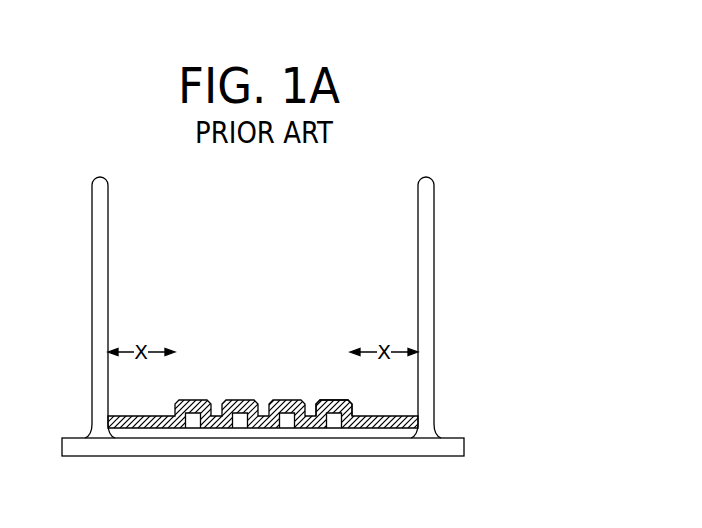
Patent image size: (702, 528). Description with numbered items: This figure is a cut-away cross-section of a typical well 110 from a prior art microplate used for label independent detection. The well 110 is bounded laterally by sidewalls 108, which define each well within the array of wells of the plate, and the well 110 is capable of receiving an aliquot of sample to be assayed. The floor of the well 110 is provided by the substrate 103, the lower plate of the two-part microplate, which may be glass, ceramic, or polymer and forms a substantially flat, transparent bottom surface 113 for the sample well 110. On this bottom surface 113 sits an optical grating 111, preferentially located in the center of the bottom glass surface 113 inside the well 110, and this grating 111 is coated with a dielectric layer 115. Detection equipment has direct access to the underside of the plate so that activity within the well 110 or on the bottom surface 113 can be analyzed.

The substrate 103 is at (453, 447).
The sidewalls 108 is at (92, 231).
The well 110 is at (498, 290).
The optical grating 111 is at (196, 414).
The bottom surface 113 is at (363, 437).
The dielectric layer 115 is at (336, 403).